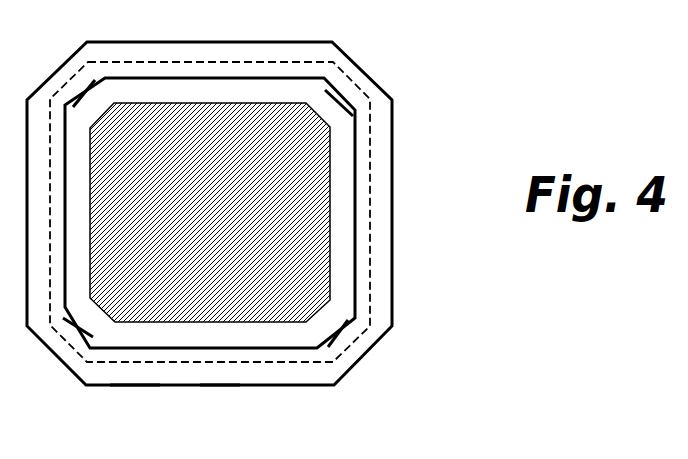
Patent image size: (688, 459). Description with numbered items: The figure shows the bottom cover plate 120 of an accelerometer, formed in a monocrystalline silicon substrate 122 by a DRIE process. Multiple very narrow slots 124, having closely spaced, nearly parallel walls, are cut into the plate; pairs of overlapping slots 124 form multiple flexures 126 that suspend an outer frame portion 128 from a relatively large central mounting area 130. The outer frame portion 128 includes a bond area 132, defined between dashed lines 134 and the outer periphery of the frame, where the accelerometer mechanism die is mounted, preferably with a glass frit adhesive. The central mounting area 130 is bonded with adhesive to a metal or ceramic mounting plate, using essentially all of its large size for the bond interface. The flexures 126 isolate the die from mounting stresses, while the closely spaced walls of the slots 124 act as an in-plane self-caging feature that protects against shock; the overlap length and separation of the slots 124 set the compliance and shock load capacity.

The bottom cover plate 120 is at (392, 69).
The monocrystalline silicon substrate 122 is at (392, 148).
The slots 124 is at (355, 233).
The flexures 126 is at (352, 320).
The outer frame portion 128 is at (132, 387).
The central mounting area 130 is at (330, 215).
The bond area 132 is at (217, 375).
The dashed lines 134 is at (300, 363).